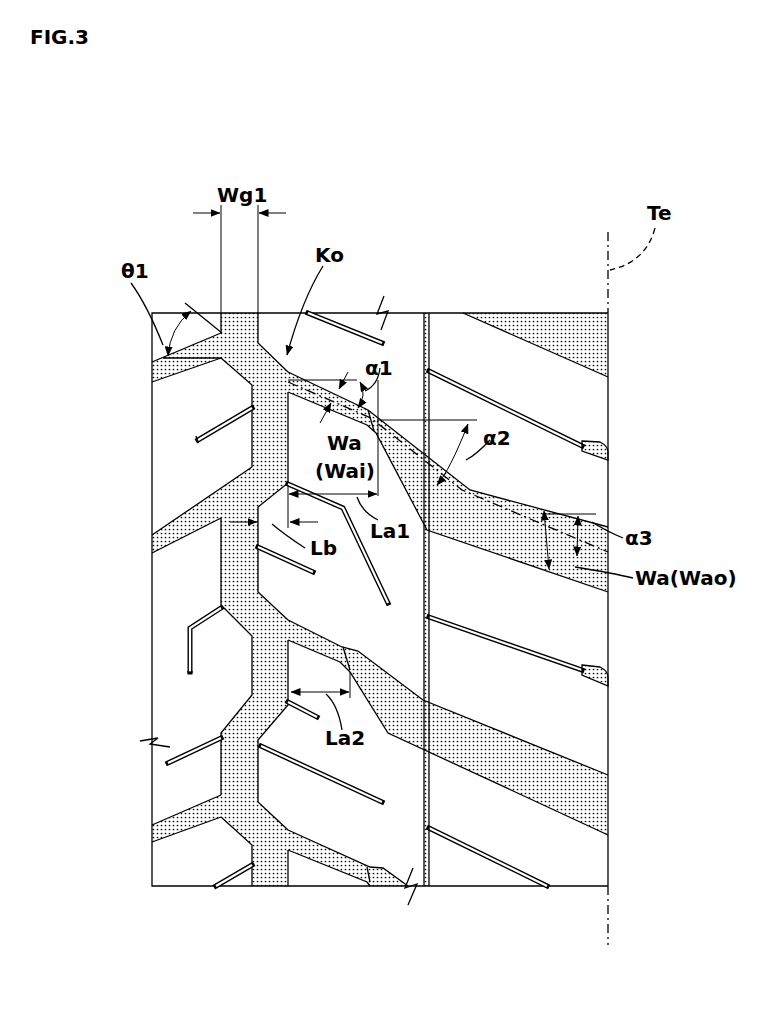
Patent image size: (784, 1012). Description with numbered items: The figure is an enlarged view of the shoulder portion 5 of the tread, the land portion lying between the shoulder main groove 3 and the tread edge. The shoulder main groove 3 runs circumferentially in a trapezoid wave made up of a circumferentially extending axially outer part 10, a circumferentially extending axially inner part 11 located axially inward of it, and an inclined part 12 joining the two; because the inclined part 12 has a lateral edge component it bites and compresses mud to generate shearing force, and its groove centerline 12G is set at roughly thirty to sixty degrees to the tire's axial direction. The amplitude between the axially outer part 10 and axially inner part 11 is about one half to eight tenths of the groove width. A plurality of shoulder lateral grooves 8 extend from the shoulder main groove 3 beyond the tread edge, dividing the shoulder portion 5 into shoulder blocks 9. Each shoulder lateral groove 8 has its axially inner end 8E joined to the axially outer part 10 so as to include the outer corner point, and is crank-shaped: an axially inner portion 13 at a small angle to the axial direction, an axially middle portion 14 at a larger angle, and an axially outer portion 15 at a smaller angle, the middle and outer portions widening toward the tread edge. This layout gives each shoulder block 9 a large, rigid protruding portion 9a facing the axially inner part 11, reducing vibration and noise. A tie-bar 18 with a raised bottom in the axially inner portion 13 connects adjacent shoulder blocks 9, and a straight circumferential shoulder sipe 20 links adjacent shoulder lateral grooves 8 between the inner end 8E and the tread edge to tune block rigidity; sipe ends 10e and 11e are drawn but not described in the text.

The shoulder main groove 3 is at (243, 330).
The shoulder portion 5 is at (461, 309).
The shoulder lateral groove 8 is at (665, 305).
The axially inner end 8E is at (294, 366).
The shoulder block 9 is at (521, 707).
The protruding portion 9a is at (263, 633).
The axially outer part 10 is at (257, 435).
The end of first sipe 10e is at (252, 405).
The axially inner part 11 is at (263, 540).
The end of second sipe 11e is at (265, 583).
The inclined part 12 is at (245, 368).
The groove centerline 12G is at (208, 324).
The axially inner portion 13 is at (377, 410).
The axially middle portion 14 is at (580, 440).
The axially outer portion 15 is at (517, 503).
The tie-bar 18 is at (381, 665).
The shoulder sipe 20 is at (428, 861).